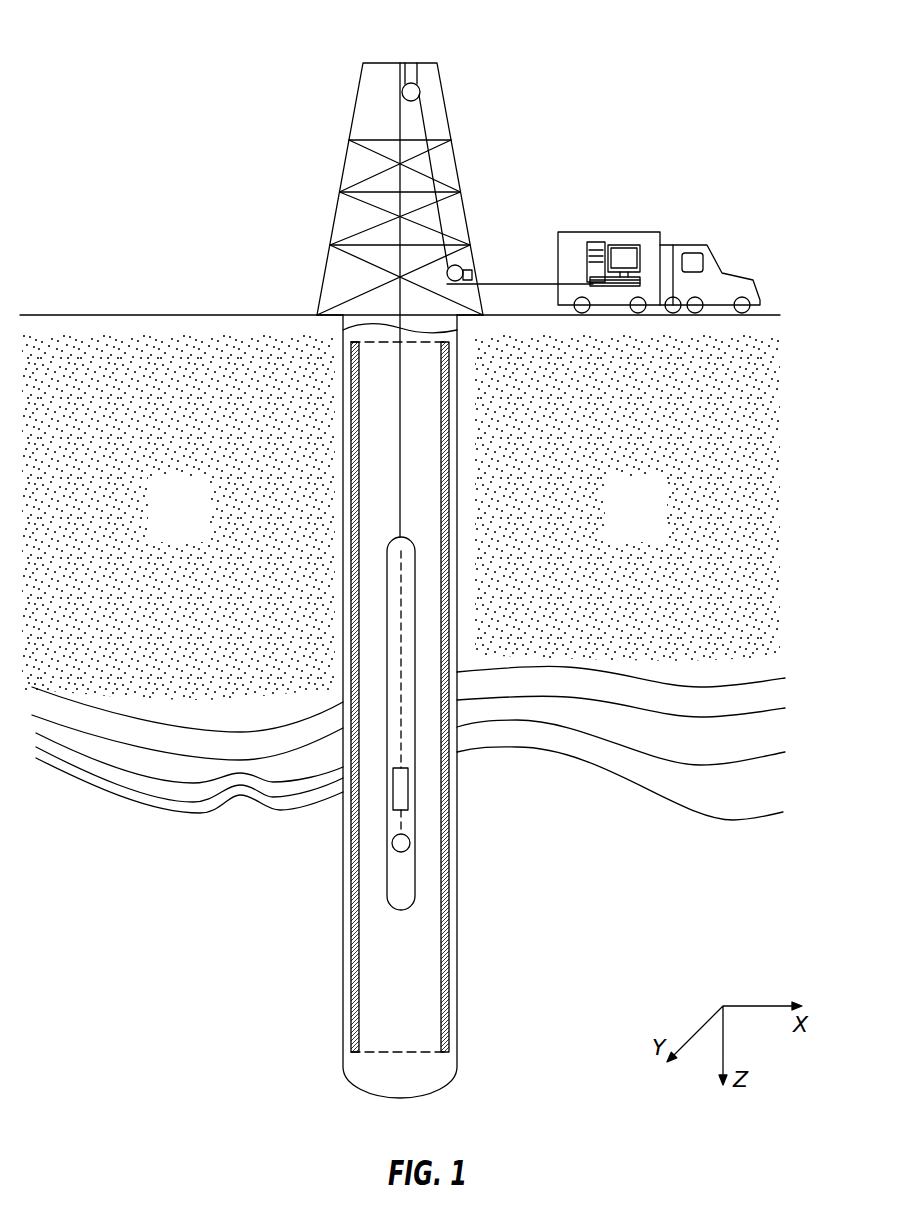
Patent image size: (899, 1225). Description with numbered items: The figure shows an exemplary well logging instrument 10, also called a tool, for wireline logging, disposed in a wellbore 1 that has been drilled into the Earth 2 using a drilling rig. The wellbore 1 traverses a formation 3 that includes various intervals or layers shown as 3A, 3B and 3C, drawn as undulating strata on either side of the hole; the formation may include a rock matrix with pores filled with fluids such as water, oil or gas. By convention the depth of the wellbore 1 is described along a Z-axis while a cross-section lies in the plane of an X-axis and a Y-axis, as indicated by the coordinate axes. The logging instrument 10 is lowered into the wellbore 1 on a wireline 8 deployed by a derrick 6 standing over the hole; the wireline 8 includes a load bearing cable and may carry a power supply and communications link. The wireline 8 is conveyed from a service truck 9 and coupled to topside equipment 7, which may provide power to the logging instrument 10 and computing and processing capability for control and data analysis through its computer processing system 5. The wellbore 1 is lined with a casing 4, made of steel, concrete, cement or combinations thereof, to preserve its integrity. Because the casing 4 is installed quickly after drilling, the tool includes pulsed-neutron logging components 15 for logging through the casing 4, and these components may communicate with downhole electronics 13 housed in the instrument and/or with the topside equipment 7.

The wellbore 1 is at (358, 1088).
The Earth 2 is at (644, 541).
The formation 3 is at (436, 761).
The formation interval 3A is at (778, 692).
The formation interval 3B is at (778, 736).
The formation interval 3C is at (649, 783).
The casing 4 is at (351, 437).
The computer processing system 5 is at (628, 245).
The derrick 6 is at (372, 63).
The topside equipment 7 is at (583, 232).
The wireline 8 is at (400, 127).
The service truck 9 is at (732, 272).
The well logging instrument 10 is at (310, 935).
The downhole electronics 13 is at (312, 833).
The pulsed-neutron logging components 15 is at (315, 878).